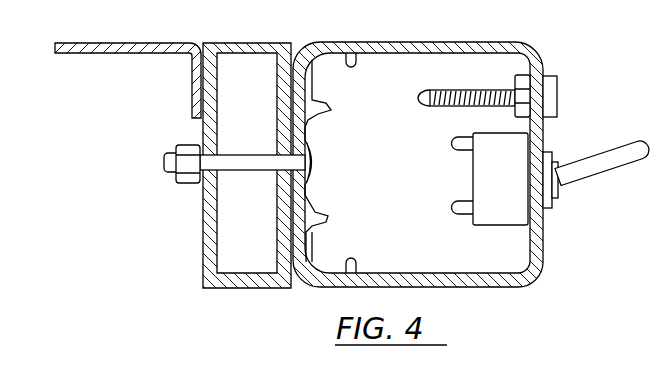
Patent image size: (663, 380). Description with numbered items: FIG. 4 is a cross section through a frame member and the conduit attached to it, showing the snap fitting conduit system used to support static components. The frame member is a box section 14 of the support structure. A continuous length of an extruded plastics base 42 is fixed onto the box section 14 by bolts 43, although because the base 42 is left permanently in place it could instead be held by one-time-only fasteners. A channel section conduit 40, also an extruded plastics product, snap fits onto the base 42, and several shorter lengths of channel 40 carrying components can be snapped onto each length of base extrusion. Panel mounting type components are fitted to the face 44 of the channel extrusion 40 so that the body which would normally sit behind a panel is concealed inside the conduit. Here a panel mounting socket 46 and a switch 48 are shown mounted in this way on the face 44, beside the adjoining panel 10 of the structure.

The panel 10 is at (113, 45).
The mounting bracket 14 is at (234, 283).
The housing 40 is at (425, 44).
The spring clip 42 is at (308, 205).
The bolt 43 is at (257, 167).
The switch 44 is at (535, 143).
The screw 46 is at (560, 88).
The toggle lever 48 is at (607, 168).